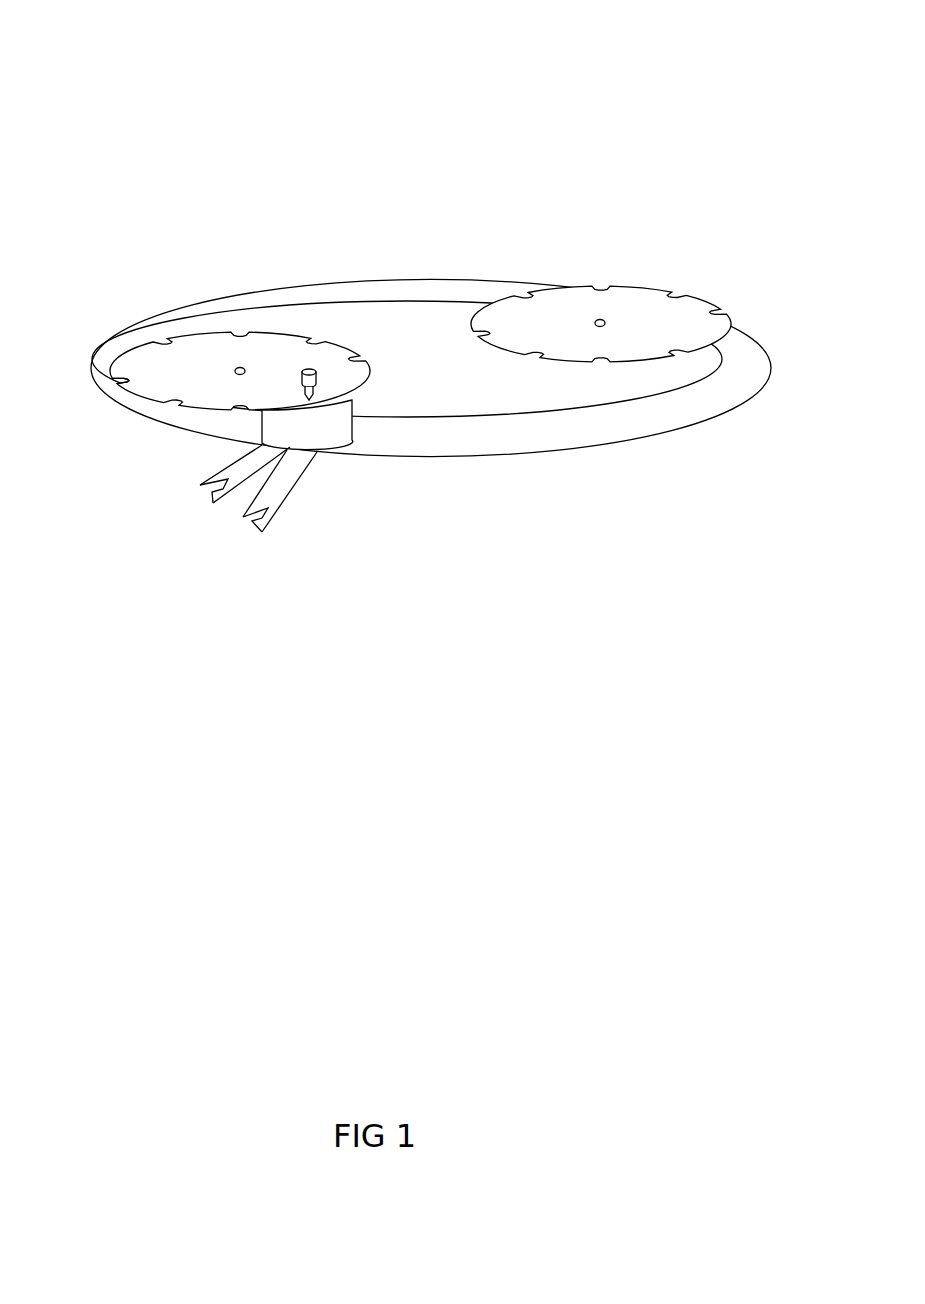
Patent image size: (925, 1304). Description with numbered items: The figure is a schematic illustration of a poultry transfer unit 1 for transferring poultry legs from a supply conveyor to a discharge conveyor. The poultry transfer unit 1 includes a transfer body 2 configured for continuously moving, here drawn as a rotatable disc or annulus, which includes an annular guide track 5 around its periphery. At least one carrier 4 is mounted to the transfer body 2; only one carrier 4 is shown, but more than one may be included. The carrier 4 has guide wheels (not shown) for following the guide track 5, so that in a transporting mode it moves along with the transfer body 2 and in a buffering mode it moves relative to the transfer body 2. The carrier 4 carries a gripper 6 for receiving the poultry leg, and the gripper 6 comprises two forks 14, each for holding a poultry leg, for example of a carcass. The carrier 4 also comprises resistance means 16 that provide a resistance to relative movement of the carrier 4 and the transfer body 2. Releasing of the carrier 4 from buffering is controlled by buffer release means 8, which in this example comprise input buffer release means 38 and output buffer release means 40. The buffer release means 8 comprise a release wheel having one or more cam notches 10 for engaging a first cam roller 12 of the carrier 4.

The poultry transfer unit 1 is at (125, 118).
The transfer body 2 is at (408, 280).
The carrier 4 is at (327, 458).
The annular guide track 5 is at (655, 437).
The gripper 6 is at (215, 463).
The buffer release means 8 is at (368, 386).
The cam notch 10 is at (119, 385).
The first cam roller 12 is at (293, 373).
The fork 14 is at (222, 502).
The resistance means 16 is at (343, 430).
The input buffer release means 38 is at (277, 334).
The output buffer release means 40 is at (657, 287).